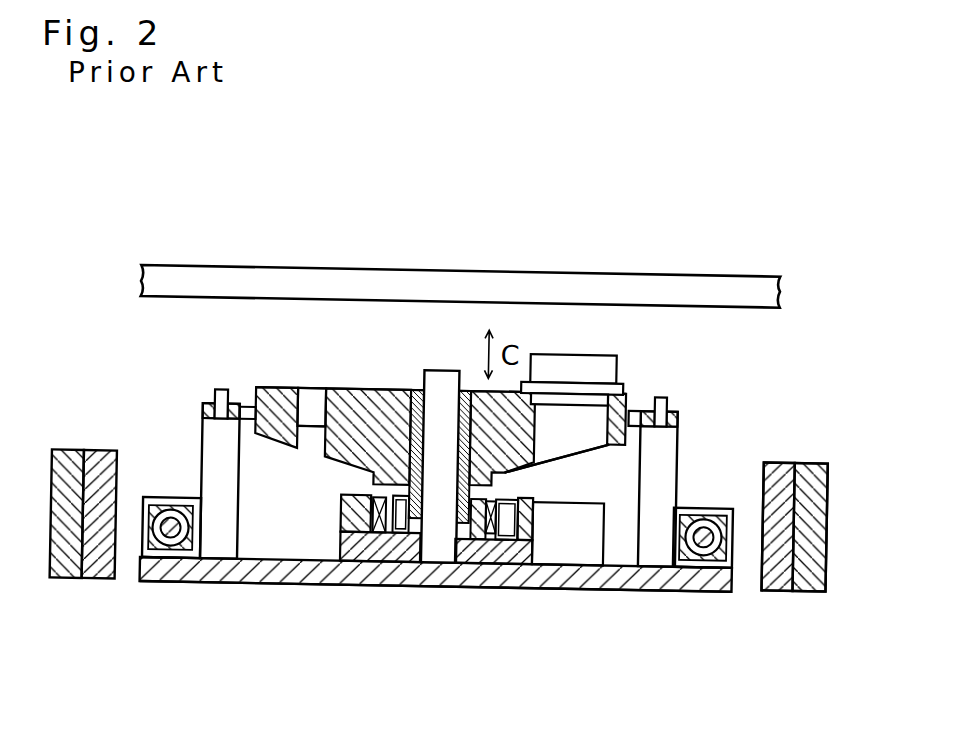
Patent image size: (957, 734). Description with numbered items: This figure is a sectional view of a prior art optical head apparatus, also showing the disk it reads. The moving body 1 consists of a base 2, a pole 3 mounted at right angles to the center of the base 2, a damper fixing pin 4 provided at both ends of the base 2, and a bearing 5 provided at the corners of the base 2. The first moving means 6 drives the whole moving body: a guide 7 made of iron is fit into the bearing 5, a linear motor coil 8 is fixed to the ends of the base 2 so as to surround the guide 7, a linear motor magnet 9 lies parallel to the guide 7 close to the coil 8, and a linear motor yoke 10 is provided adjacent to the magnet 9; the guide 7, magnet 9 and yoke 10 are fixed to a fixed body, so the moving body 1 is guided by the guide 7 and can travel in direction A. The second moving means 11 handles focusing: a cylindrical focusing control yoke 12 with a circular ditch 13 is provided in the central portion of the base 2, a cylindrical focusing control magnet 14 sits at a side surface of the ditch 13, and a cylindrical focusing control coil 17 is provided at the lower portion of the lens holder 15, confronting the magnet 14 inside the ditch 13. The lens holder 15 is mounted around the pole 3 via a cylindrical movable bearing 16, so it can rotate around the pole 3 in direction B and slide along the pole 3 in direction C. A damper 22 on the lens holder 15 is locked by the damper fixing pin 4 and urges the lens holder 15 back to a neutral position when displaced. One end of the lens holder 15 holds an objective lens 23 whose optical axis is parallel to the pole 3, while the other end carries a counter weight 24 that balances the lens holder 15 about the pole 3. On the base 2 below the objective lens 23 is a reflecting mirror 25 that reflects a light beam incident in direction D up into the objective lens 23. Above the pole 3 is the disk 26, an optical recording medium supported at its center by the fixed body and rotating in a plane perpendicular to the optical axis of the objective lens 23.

The moving body 1 is at (185, 581).
The base 2 is at (674, 583).
The pole 3 is at (442, 363).
The damper fixing pin 4 is at (222, 388).
The bearing 5 is at (162, 581).
The first moving means 6 is at (827, 503).
The guide 7 is at (150, 540).
The linear motor coil 8 is at (172, 496).
The linear motor magnet 9 is at (91, 451).
The linear motor yoke 10 is at (58, 451).
The second moving means 11 is at (340, 493).
The focusing control yoke 12 is at (340, 538).
The circular ditch 13 is at (506, 559).
The focusing control magnet 14 is at (503, 470).
The lens holder 15 is at (348, 385).
The movable bearing 16 is at (417, 384).
The focusing control coil 17 is at (385, 560).
The damper 22 is at (632, 401).
The objective lens 23 is at (555, 347).
The counter weight 24 is at (310, 390).
The reflecting mirror 25 is at (566, 548).
The disk 26 is at (210, 261).